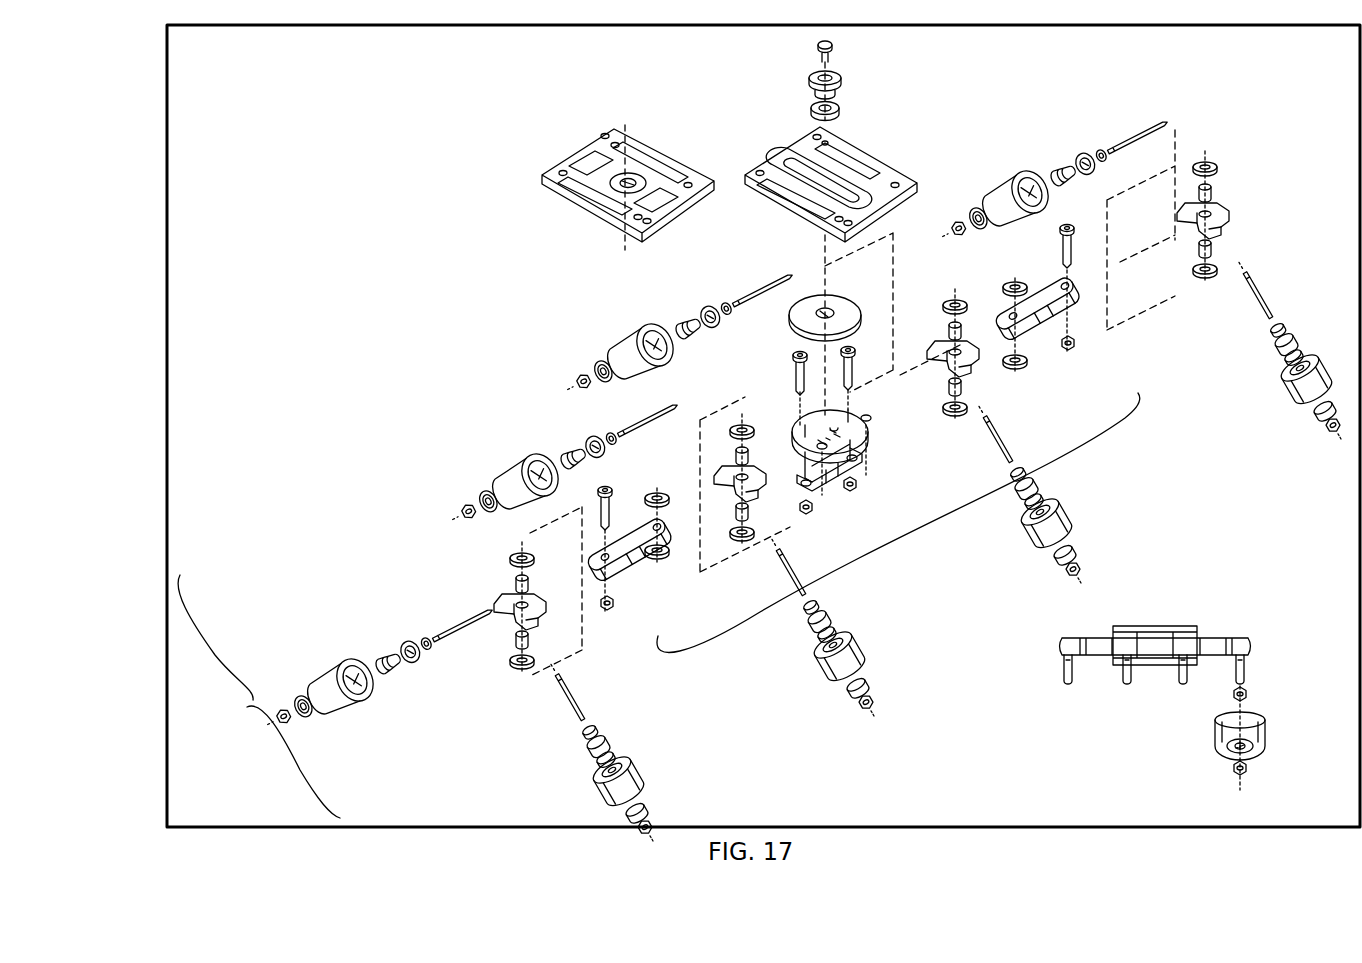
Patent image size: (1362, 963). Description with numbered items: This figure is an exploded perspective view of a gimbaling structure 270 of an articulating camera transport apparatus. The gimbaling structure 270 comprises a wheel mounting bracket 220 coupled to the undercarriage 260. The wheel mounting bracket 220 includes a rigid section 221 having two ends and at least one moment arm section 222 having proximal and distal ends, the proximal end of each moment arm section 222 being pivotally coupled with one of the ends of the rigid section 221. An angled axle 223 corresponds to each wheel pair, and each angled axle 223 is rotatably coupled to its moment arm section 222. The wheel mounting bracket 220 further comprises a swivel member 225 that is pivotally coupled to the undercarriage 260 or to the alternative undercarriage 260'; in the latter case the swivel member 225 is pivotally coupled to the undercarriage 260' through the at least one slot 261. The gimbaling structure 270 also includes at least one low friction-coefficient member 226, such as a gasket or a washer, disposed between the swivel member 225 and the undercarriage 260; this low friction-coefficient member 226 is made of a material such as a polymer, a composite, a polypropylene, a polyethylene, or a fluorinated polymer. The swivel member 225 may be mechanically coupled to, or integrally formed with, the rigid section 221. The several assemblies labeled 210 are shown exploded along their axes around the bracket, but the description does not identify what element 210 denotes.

The adjustable knob assembly 210 is at (1028, 178).
The wheel mounting bracket 220 is at (898, 522).
The rigid section 221 is at (845, 470).
The moment arm section 222 is at (1040, 330).
The angled axle 223 is at (1230, 219).
The swivel member 225 is at (870, 434).
The low friction-coefficient member 226 is at (858, 303).
The undercarriage 260 is at (596, 185).
The undercarriage 260' is at (867, 141).
The slot 261 is at (836, 187).
The gimbaling structure 270 is at (259, 696).